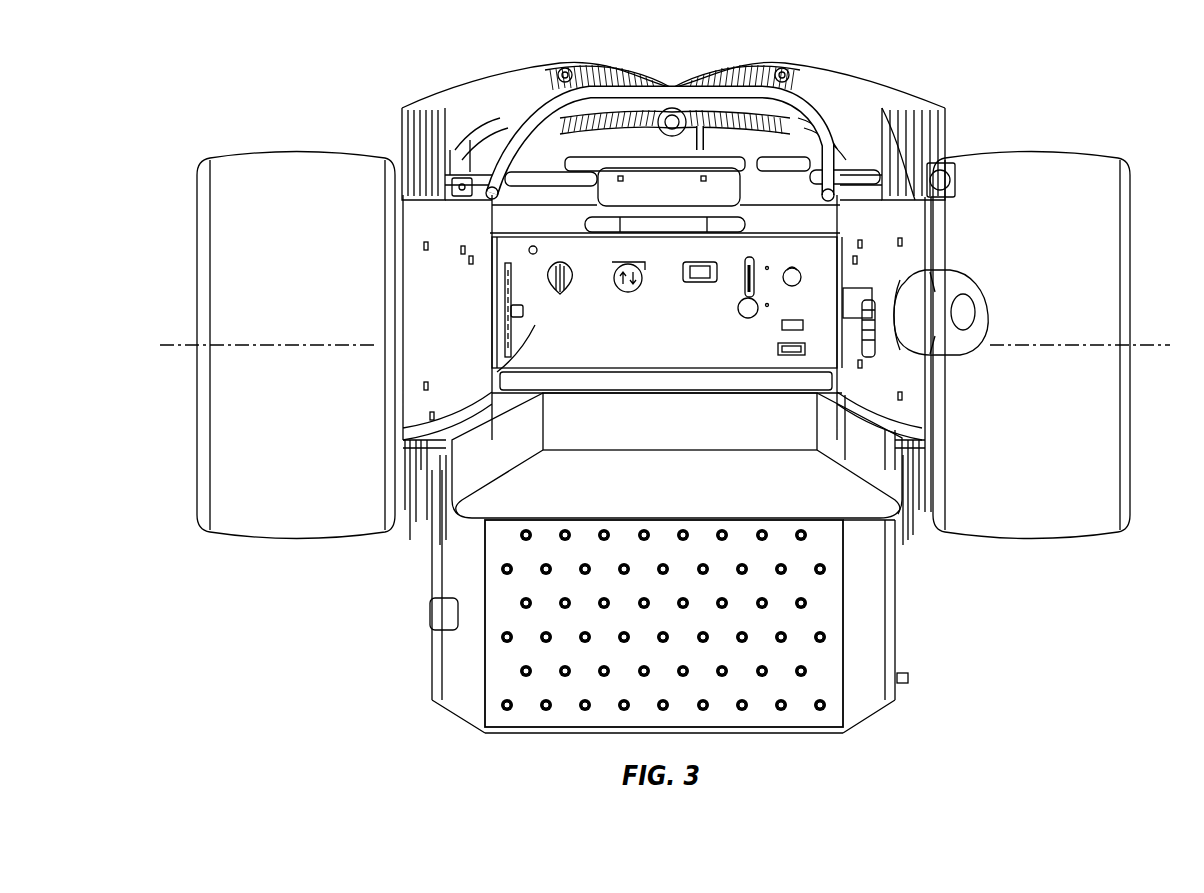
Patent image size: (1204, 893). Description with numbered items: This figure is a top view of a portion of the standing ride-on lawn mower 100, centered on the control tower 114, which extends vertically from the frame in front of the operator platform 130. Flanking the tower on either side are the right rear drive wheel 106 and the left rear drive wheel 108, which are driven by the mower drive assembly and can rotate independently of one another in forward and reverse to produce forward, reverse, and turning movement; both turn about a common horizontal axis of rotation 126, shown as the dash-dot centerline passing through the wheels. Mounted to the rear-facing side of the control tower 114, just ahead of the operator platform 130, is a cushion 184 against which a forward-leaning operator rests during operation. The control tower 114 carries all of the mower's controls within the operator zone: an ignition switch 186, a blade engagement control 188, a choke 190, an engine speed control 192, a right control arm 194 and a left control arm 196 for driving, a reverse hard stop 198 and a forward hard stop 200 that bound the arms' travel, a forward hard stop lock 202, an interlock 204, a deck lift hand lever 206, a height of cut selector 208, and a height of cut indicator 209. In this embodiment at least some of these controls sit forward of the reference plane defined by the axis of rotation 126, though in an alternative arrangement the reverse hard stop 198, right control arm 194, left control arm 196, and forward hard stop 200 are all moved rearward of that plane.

The lawn mower 100 is at (316, 90).
The right rear drive wheel 106 is at (1032, 518).
The left rear drive wheel 108 is at (298, 520).
The control tower 114 is at (884, 288).
The axis of rotation 126 is at (1102, 344).
The operator platform 130 is at (817, 675).
The cushion 184 is at (820, 500).
The ignition switch 186 is at (512, 302).
The blade engagement control 188 is at (872, 345).
The choke 190 is at (800, 272).
The engine speed control 192 is at (745, 306).
The right control arm 194 is at (717, 156).
The left control arm 196 is at (610, 172).
The reverse hard stop 198 is at (551, 277).
The forward hard stop 200 is at (542, 112).
The forward hard stop lock 202 is at (460, 186).
The interlock 204 is at (628, 290).
The deck lift hand lever 206 is at (958, 185).
The height of cut selector 208 is at (505, 335).
The height of cut indicator 209 is at (498, 375).